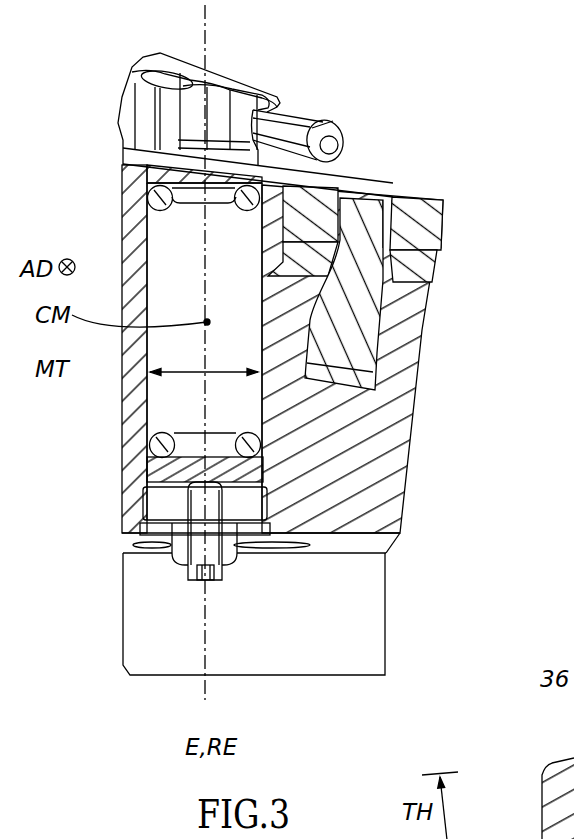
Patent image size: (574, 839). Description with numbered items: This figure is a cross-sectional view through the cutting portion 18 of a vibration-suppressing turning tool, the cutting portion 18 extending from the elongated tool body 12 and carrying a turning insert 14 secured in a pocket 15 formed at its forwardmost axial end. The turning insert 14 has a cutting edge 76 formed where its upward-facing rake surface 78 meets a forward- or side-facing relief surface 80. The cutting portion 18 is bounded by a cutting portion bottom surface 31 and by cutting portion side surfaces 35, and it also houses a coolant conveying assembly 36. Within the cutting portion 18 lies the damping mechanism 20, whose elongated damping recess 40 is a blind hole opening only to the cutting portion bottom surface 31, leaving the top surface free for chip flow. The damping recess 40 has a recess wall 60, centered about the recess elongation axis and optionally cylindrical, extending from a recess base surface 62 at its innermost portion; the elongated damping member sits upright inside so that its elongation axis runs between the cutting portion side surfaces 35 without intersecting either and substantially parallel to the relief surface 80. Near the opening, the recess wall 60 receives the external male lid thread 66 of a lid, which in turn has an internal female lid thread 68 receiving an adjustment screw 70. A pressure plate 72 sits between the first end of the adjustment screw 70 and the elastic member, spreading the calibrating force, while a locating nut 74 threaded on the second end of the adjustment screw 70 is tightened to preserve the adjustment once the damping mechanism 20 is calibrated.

The tool body 12 is at (407, 628).
The turning insert 14 is at (452, 220).
The pocket 15 is at (378, 183).
The cutting portion 18 is at (335, 108).
The damping mechanism 20 is at (175, 590).
The cutting portion bottom surface 31 is at (388, 540).
The cutting portion side surfaces 35 is at (123, 423).
The coolant conveying assembly 36 is at (247, 67).
The damping recess 40 is at (190, 453).
The recess wall 60 is at (260, 300).
The recess base surface 62 is at (150, 212).
The external male lid thread 66 is at (283, 480).
The internal female lid thread 68 is at (283, 480).
The adjustment screw 70 is at (205, 553).
The pressure plate 72 is at (140, 517).
The locating nut 74 is at (140, 530).
The cutting edge 76 is at (443, 200).
The rake surface 78 is at (423, 193).
The relief surface 80 is at (440, 233).